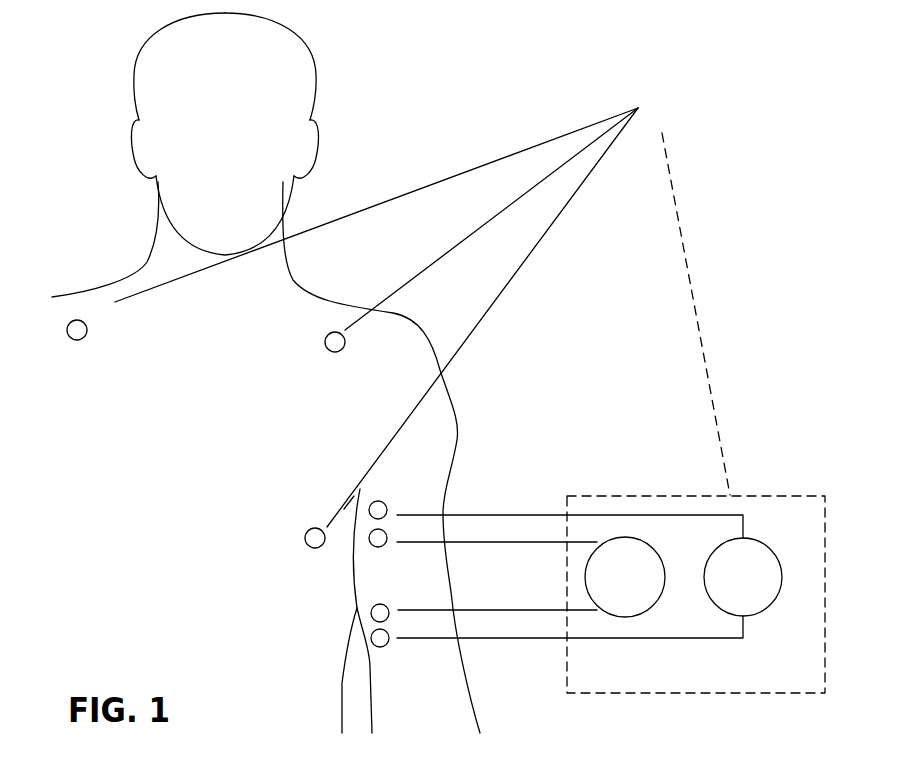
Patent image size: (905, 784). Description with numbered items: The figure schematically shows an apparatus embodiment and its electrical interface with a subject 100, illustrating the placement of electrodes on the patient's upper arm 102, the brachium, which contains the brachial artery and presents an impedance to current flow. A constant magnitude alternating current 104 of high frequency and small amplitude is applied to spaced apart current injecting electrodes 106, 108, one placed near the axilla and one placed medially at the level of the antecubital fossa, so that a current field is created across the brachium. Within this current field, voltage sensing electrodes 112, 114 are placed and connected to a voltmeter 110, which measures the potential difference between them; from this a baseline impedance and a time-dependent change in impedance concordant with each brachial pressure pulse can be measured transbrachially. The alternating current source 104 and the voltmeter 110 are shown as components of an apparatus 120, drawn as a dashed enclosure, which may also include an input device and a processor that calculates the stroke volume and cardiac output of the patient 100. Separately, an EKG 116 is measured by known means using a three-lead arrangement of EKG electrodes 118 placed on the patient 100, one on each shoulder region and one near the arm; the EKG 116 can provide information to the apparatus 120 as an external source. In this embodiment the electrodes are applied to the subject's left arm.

The subject 100 is at (221, 538).
The upper arm 102 is at (452, 583).
The alternating current 104 is at (757, 616).
The current injecting electrode 106 is at (385, 503).
The current injecting electrode 108 is at (388, 645).
The voltmeter 110 is at (637, 617).
The voltage sensing electrode 112 is at (386, 545).
The voltage sensing electrode 114 is at (388, 606).
The EKG 116 is at (658, 66).
The EKG electrodes 118 is at (78, 340).
The apparatus 120 is at (733, 694).